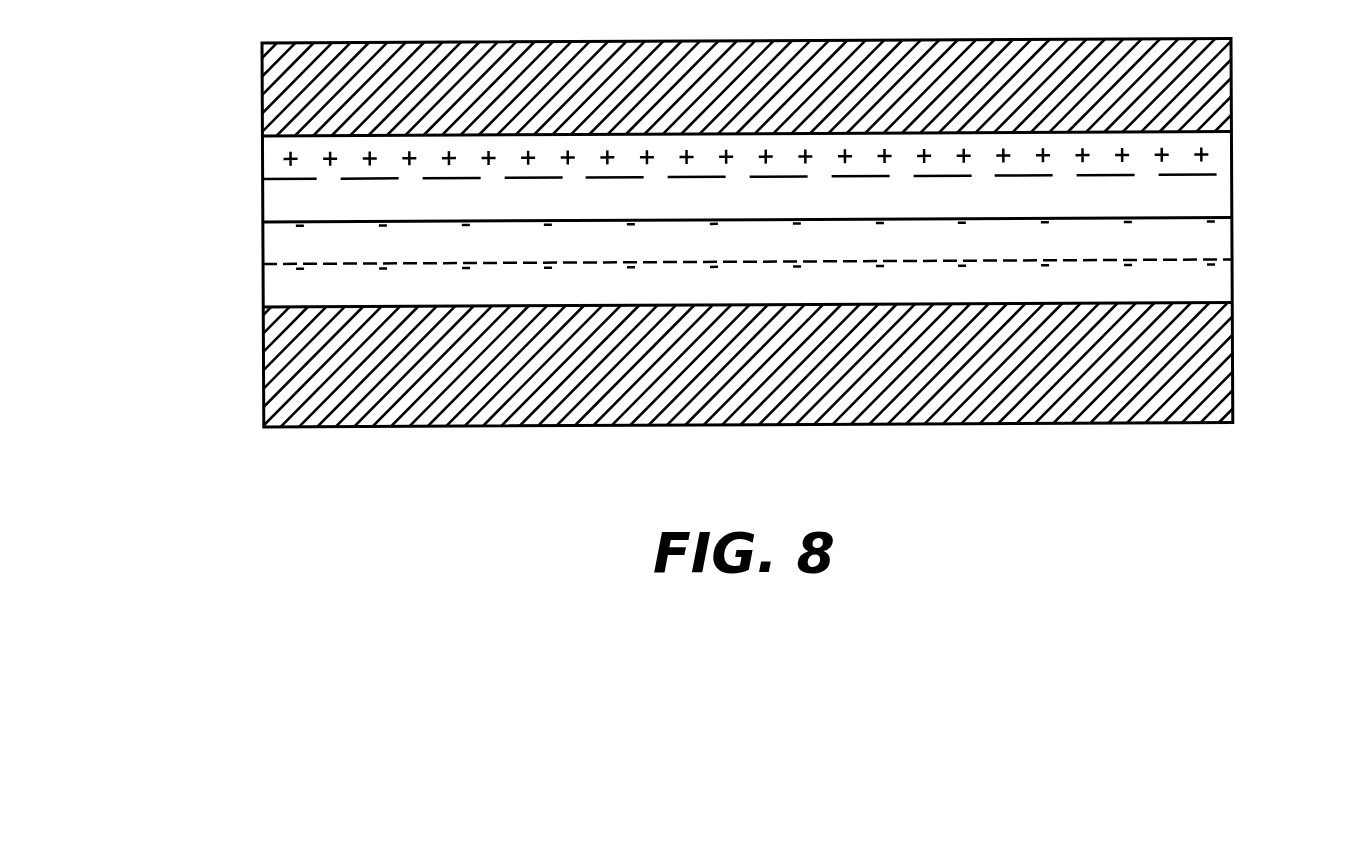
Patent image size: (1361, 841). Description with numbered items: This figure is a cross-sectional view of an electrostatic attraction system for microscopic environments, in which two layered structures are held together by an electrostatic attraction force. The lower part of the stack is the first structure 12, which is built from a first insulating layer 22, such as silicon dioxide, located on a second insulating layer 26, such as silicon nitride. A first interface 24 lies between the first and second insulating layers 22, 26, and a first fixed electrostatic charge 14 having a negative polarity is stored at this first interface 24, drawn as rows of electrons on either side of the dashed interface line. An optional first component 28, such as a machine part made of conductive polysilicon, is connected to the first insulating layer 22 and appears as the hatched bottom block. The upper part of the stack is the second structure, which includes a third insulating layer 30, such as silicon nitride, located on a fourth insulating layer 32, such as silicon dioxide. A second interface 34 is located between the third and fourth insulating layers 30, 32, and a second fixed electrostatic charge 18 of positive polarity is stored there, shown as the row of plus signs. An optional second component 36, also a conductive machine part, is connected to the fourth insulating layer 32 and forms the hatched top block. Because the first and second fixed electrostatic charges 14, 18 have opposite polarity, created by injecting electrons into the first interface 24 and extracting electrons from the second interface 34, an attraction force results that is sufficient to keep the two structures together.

The first structure 12 is at (208, 283).
The first fixed electrostatic charge 14 is at (258, 247).
The second fixed electrostatic charge 18 is at (258, 153).
The first insulating layer 22 is at (1224, 280).
The first interface 24 is at (1240, 257).
The second insulating layer 26 is at (1224, 237).
The first component 28 is at (1224, 390).
The third insulating layer 30 is at (1224, 195).
The fourth insulating layer 32 is at (1224, 152).
The second interface 34 is at (1240, 174).
The second component 36 is at (1224, 70).